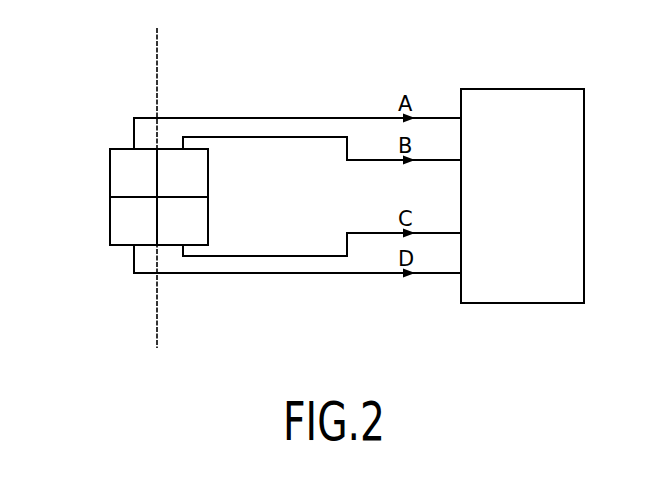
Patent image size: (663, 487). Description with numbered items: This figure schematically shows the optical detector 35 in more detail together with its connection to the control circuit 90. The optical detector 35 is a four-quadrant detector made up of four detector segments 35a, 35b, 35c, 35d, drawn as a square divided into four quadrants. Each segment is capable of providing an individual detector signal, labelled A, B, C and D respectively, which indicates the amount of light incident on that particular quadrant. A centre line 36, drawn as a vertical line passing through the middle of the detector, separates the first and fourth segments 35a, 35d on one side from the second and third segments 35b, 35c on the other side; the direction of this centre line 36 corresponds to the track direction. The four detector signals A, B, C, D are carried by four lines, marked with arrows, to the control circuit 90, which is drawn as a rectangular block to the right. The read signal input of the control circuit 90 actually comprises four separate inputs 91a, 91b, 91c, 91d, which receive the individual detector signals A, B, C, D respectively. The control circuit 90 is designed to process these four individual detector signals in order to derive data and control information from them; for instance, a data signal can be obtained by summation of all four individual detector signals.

The optical detector 35 is at (131, 88).
The first detector segment 35a is at (110, 172).
The second detector segment 35b is at (208, 172).
The third detector segment 35c is at (208, 220).
The fourth detector segment 35d is at (110, 220).
The centre line 36 is at (158, 83).
The control circuit 90 is at (522, 196).
The first input 91a is at (479, 118).
The second input 91b is at (479, 160).
The third input 91c is at (478, 233).
The fourth input 91d is at (479, 273).